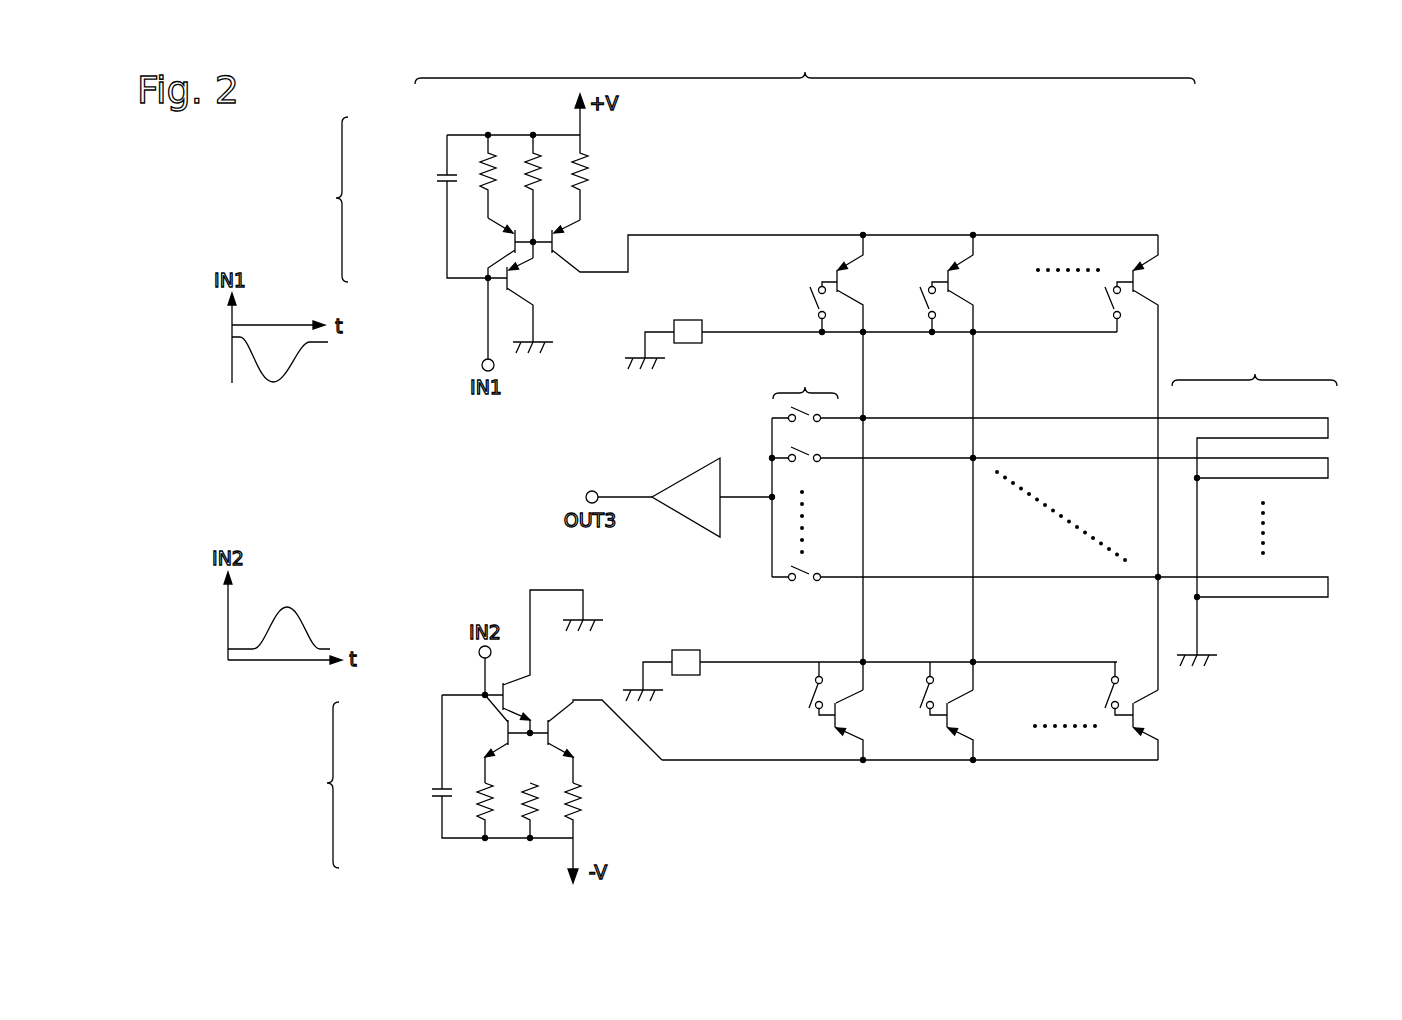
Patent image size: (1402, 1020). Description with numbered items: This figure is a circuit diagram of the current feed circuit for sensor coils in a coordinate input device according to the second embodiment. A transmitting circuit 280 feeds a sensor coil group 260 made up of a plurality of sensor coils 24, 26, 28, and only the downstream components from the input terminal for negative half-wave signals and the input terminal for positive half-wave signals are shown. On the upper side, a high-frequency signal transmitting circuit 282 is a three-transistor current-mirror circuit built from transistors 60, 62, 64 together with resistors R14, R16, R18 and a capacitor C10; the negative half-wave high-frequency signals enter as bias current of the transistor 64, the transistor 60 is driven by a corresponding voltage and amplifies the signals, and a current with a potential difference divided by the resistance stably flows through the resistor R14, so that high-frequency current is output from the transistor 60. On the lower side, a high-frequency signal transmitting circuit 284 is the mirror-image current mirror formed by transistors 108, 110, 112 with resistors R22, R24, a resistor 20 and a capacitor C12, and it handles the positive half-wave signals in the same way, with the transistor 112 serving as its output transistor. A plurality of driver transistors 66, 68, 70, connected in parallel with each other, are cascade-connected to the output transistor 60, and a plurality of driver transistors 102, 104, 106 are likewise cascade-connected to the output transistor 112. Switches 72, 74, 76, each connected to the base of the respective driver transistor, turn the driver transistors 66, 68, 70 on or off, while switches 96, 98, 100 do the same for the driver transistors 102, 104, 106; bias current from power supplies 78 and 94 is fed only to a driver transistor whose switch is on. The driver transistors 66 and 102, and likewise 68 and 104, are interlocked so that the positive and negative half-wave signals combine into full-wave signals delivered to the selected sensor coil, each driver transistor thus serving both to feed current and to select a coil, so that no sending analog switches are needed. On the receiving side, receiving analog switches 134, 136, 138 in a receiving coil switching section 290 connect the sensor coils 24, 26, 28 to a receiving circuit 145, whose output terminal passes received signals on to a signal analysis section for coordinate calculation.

The resistor R20 20 is at (585, 815).
The sensor coil 24 is at (1318, 418).
The sensor coil 26 is at (1318, 458).
The sensor coil 28 is at (1318, 578).
The transistor 60 is at (569, 248).
The transistor 62 is at (506, 253).
The transistor 64 is at (533, 292).
The driver transistor 66 is at (852, 286).
The driver transistor 68 is at (968, 298).
The driver transistor 70 is at (1160, 298).
The switch 72 is at (810, 302).
The switch 74 is at (920, 302).
The switch 76 is at (1105, 302).
The power supply 78 is at (690, 320).
The power supply 94 is at (688, 650).
The switch 96 is at (808, 703).
The switch 98 is at (920, 703).
The switch 100 is at (1105, 703).
The driver transistor 102 is at (852, 720).
The driver transistor 104 is at (962, 702).
The driver transistor 106 is at (1150, 702).
The transistor 108 is at (500, 724).
The transistor 110 is at (535, 682).
The transistor 112 is at (577, 737).
The receiving analog switch 134 is at (803, 412).
The receiving analog switch 136 is at (803, 452).
The receiving analog switch 138 is at (803, 571).
The receiving circuit 145 is at (680, 478).
The sensor coil group 260 is at (1254, 368).
The transmitting circuit 280 is at (805, 66).
The high-frequency signal transmitting circuit 282 is at (321, 199).
The high-frequency signal transmitting circuit 284 is at (312, 785).
The receiving coil switching section 290 is at (805, 380).
The resistor R14 is at (590, 166).
The resistor R16 is at (530, 160).
The resistor R18 is at (483, 160).
The resistor R22 is at (525, 808).
The resistor R24 is at (480, 808).
The capacitor C10 is at (435, 178).
The capacitor C12 is at (433, 793).